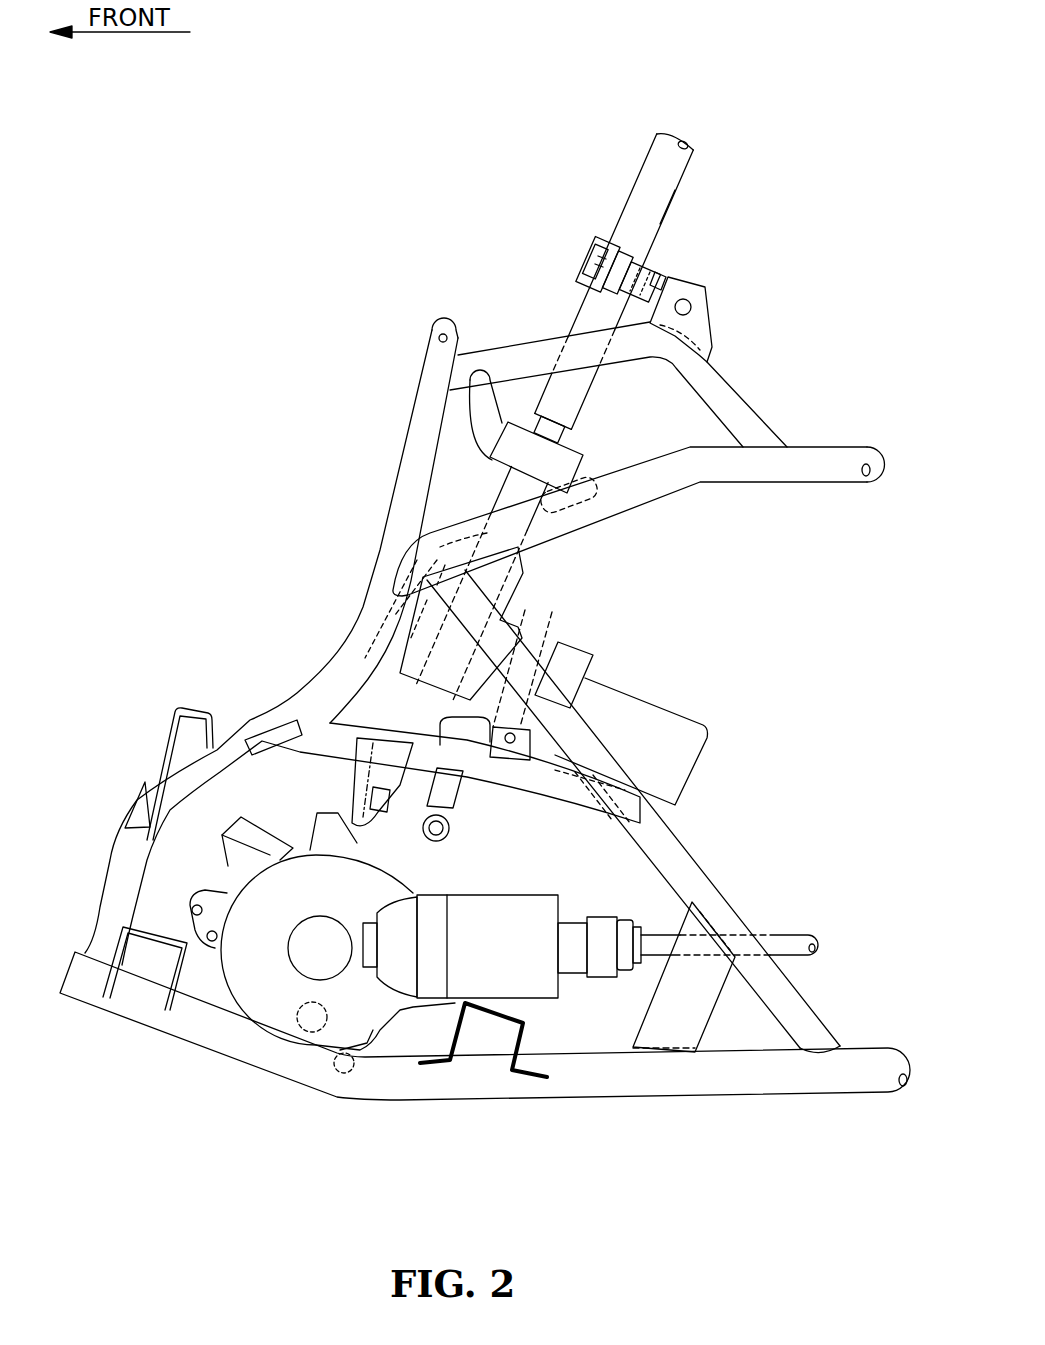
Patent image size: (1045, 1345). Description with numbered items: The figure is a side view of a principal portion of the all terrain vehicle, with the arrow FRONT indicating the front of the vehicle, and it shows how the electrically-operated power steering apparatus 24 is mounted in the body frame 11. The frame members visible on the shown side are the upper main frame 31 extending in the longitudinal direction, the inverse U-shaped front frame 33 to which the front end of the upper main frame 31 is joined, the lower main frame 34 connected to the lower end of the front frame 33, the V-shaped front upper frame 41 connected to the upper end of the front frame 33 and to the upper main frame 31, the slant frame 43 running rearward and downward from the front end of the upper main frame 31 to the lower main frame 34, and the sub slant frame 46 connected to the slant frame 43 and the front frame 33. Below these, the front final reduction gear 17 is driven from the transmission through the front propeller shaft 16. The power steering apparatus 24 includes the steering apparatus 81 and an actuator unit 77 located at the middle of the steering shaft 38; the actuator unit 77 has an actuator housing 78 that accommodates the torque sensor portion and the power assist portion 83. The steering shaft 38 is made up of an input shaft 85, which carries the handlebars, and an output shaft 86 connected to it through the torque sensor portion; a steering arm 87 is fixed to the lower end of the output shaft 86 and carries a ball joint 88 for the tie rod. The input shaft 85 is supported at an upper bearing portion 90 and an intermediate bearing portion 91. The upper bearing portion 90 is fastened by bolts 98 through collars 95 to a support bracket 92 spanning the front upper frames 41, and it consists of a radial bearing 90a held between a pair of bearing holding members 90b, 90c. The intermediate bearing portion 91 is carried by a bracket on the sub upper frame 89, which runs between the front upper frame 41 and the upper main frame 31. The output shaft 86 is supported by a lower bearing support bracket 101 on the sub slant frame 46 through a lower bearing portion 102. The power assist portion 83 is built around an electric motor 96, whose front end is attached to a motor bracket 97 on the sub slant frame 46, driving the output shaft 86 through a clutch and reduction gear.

The body frame 11 is at (408, 406).
The front propeller shaft 16 is at (797, 934).
The front final reduction gear 17 is at (258, 985).
The electrically-operated power steering apparatus 24 is at (430, 666).
The upper main frame 31 is at (830, 460).
The front frame 33 is at (310, 688).
The lower main frame 34 is at (749, 1075).
The steering shaft 38 is at (690, 177).
The front upper frame 41 is at (733, 404).
The slant frame 43 is at (795, 1007).
The sub slant frame 46 is at (262, 800).
The actuator unit 77 is at (527, 583).
The actuator housing 78 is at (503, 596).
The steering apparatus 81 is at (636, 172).
The power assist portion 83 is at (438, 625).
The input shaft 85 is at (665, 205).
The output shaft 86 is at (358, 755).
The steering arm 87 is at (480, 790).
The ball joint 88 is at (430, 845).
The sub upper frame 89 is at (497, 386).
The upper bearing portion 90 is at (598, 226).
The radial bearing 90a is at (585, 255).
The bearing holding member 90b is at (648, 234).
The bearing holding member 90c is at (578, 284).
The intermediate bearing portion 91 is at (576, 463).
The support bracket 92 is at (703, 309).
The collar 95 is at (675, 258).
The electric motor 96 is at (695, 737).
The motor bracket 97 is at (557, 775).
The bolt 98 is at (598, 245).
The lower bearing support bracket 101 is at (267, 700).
The lower bearing portion 102 is at (380, 712).